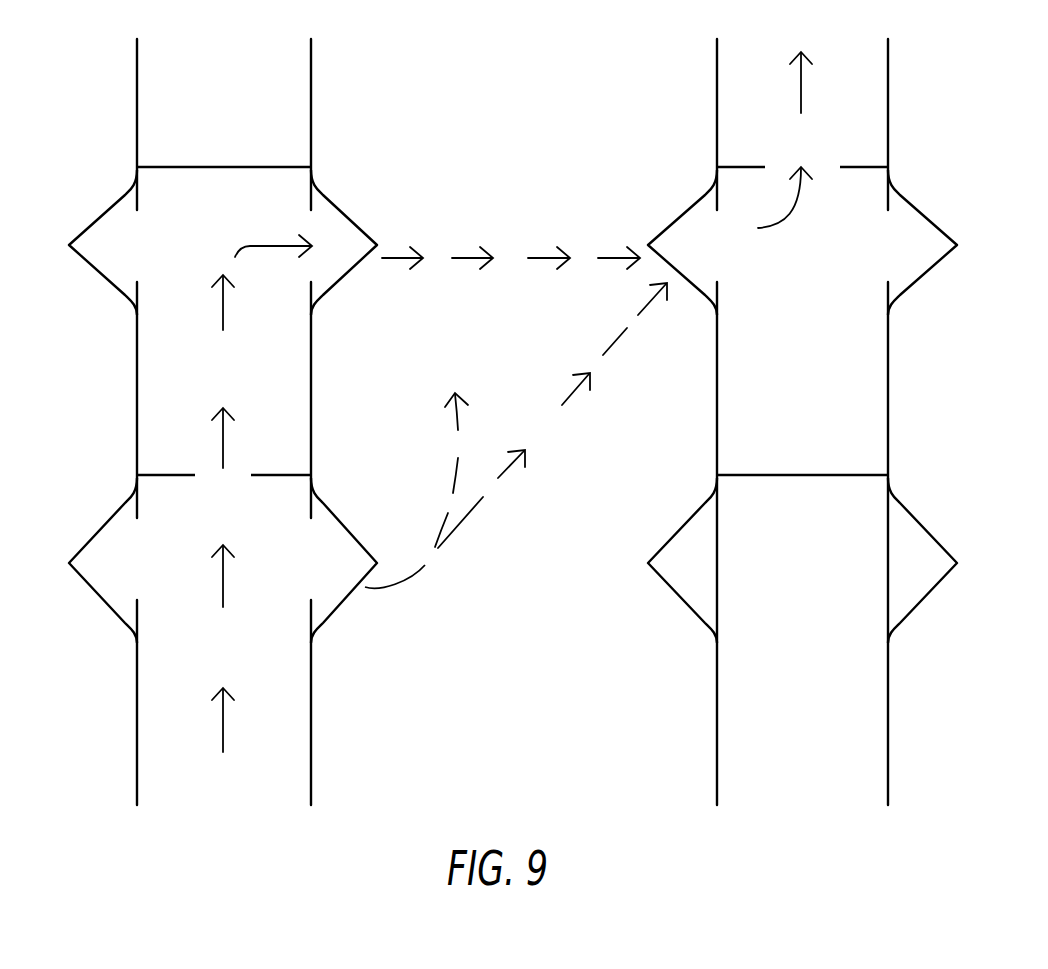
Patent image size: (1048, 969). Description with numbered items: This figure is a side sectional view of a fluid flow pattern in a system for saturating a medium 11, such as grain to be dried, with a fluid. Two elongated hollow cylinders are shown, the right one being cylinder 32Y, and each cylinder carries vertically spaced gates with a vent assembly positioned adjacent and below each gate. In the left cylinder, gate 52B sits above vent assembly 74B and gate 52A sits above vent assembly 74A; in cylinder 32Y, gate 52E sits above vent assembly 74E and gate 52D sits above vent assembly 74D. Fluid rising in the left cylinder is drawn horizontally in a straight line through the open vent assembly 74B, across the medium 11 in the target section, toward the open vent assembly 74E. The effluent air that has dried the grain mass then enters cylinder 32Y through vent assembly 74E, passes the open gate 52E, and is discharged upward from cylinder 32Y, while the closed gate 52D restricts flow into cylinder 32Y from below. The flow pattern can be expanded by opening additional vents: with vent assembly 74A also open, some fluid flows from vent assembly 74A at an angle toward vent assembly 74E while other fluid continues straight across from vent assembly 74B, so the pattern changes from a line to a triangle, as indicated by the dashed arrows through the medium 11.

The cylinder 32Y is at (311, 737).
The gate 52A is at (280, 475).
The gate 52B is at (276, 167).
The gate 52D is at (852, 475).
The gate 52E is at (863, 167).
The vent assembly 74A is at (350, 537).
The vent assembly 74B is at (345, 208).
The vent assembly 74D is at (925, 532).
The vent assembly 74E is at (925, 213).
The medium 11 is at (542, 324).